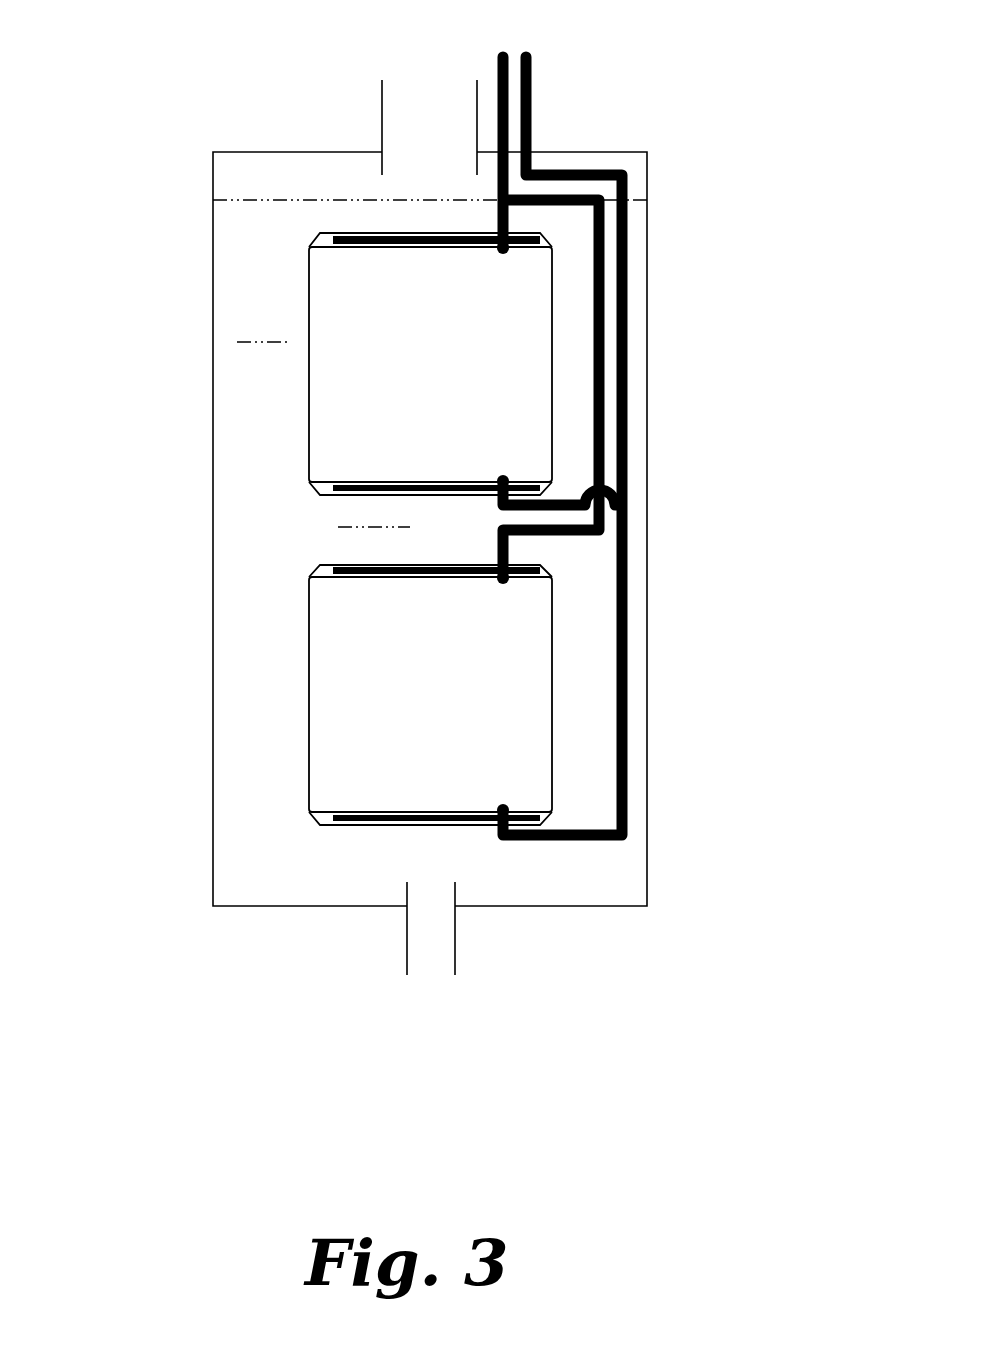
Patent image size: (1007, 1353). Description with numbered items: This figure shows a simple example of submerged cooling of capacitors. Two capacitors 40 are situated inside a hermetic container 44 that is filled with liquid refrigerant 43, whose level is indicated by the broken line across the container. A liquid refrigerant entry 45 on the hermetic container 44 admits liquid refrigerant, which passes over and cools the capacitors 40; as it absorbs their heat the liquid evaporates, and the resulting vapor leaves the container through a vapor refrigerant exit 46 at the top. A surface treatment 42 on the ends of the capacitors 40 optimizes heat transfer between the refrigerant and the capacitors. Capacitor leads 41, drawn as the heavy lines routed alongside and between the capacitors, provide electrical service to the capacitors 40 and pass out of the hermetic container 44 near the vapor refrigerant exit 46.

The capacitors 40 is at (365, 435).
The capacitor leads 41 is at (512, 58).
The surface treatment 42 is at (330, 242).
The liquid refrigerant 43 is at (302, 197).
The hermetic container 44 is at (643, 868).
The liquid refrigerant entry 45 is at (425, 975).
The vapor refrigerant exit 46 is at (425, 93).